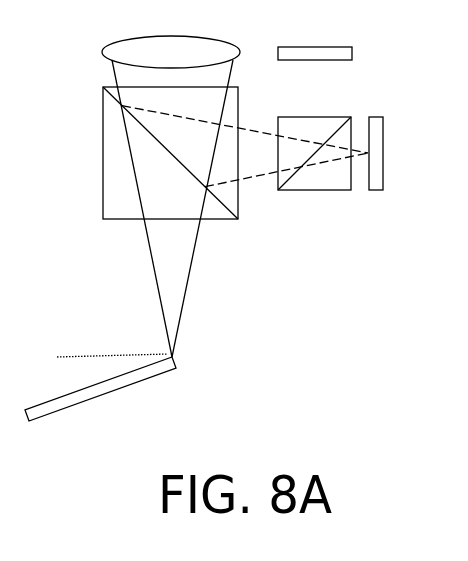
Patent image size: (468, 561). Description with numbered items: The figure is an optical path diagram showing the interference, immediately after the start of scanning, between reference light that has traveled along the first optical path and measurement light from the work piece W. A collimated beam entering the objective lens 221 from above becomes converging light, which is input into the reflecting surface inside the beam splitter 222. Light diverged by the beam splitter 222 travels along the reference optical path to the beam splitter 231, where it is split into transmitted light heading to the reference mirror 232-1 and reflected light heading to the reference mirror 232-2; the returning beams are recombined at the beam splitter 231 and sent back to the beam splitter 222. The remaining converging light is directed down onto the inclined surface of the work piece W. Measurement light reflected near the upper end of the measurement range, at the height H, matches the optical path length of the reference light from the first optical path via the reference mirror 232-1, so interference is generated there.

The objective lens 221 is at (107, 43).
The beam splitter 222 is at (102, 157).
The beam splitter 231 is at (322, 190).
The reference mirror 232-1 is at (377, 117).
The reference mirror 232-2 is at (320, 45).
The height H is at (105, 358).
The work piece W is at (172, 372).